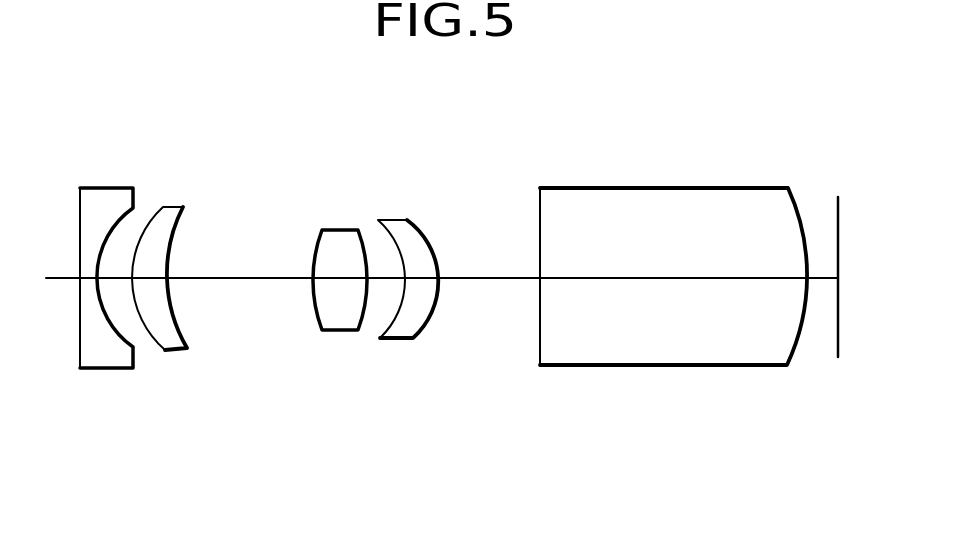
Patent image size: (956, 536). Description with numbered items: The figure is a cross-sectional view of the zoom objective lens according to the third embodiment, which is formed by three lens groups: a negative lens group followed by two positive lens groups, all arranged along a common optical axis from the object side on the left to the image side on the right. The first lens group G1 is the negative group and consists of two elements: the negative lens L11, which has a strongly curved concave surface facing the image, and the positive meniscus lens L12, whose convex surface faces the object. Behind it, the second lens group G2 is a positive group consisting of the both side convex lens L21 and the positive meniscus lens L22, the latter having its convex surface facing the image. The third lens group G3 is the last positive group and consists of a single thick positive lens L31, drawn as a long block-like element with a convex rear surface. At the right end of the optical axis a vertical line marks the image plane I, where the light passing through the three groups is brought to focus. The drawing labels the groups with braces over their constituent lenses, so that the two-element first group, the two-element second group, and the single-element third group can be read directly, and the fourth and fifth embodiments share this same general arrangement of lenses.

The first lens group G1 is at (213, 131).
The second lens group G2 is at (448, 167).
The third lens group G3 is at (693, 132).
The negative lens L11 is at (107, 190).
The positive meniscus lens L12 is at (180, 205).
The both side convex lens L21 is at (342, 228).
The positive meniscus lens L22 is at (398, 223).
The thick positive lens L31 is at (660, 198).
The image plane I is at (839, 218).